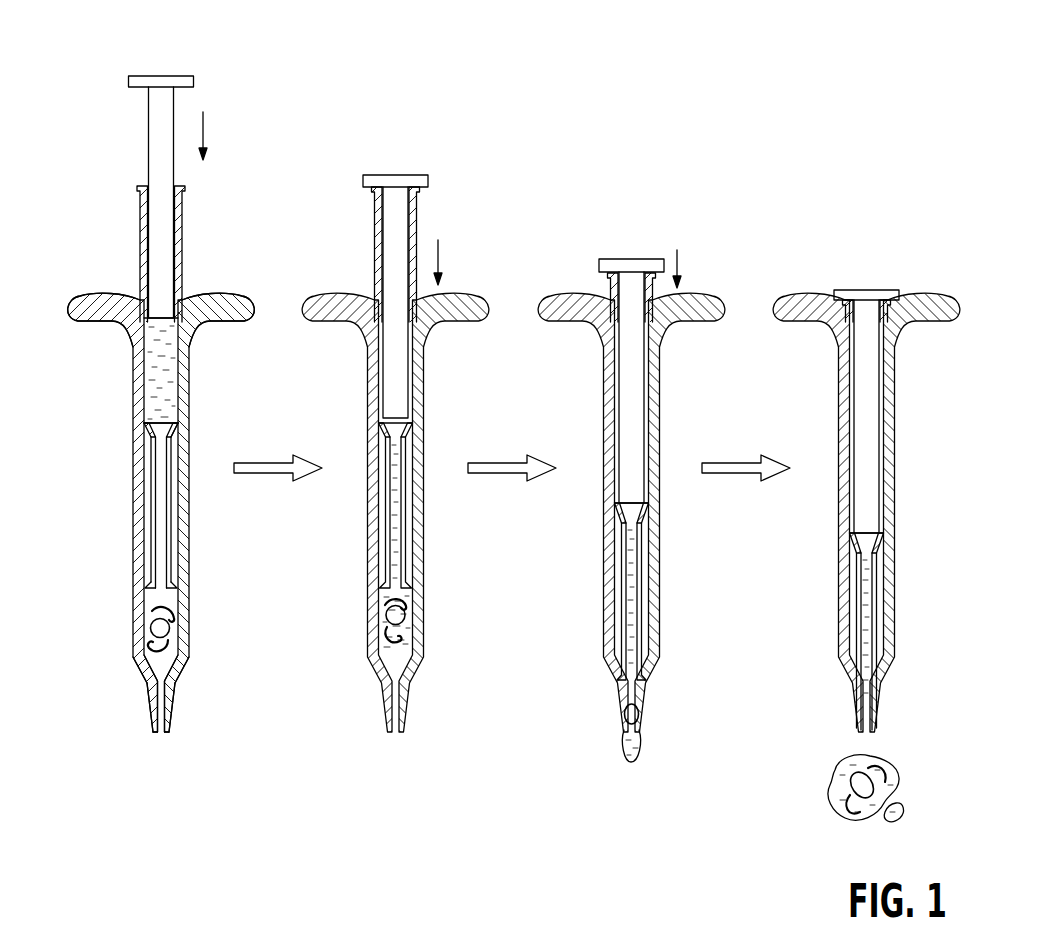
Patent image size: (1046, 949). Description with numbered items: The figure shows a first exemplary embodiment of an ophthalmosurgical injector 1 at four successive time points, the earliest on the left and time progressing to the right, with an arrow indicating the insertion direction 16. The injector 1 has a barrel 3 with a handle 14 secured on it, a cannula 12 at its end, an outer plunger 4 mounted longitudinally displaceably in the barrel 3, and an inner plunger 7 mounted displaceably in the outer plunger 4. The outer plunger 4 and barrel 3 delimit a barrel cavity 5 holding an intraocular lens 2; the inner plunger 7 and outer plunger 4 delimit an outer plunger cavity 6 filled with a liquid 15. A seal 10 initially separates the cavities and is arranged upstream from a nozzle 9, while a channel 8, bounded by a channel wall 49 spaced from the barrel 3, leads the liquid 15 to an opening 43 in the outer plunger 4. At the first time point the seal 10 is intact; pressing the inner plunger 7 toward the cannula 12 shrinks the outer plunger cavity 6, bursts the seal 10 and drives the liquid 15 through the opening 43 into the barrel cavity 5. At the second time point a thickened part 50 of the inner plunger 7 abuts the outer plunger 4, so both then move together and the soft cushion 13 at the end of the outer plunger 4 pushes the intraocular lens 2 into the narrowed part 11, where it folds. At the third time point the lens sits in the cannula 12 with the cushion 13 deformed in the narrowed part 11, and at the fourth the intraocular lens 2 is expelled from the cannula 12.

The ophthalmosurgical injector 1 is at (91, 221).
The intraocular lens 2 is at (165, 629).
The barrel 3 is at (189, 501).
The outer plunger 4 is at (181, 366).
The barrel cavity 5 is at (151, 668).
The outer plunger cavity 6 is at (112, 370).
The inner plunger 7 is at (152, 154).
The channel 8 is at (163, 540).
The nozzle 9 is at (144, 437).
The seal 10 is at (172, 433).
The narrowed part 11 is at (180, 672).
The cannula 12 is at (173, 712).
The cushion 13 is at (180, 591).
The handle 14 is at (215, 297).
The liquid 15 is at (150, 365).
The insertion direction 16 is at (203, 128).
The opening 43 is at (147, 590).
The channel wall 49 is at (151, 501).
The thickened part 50 is at (182, 76).